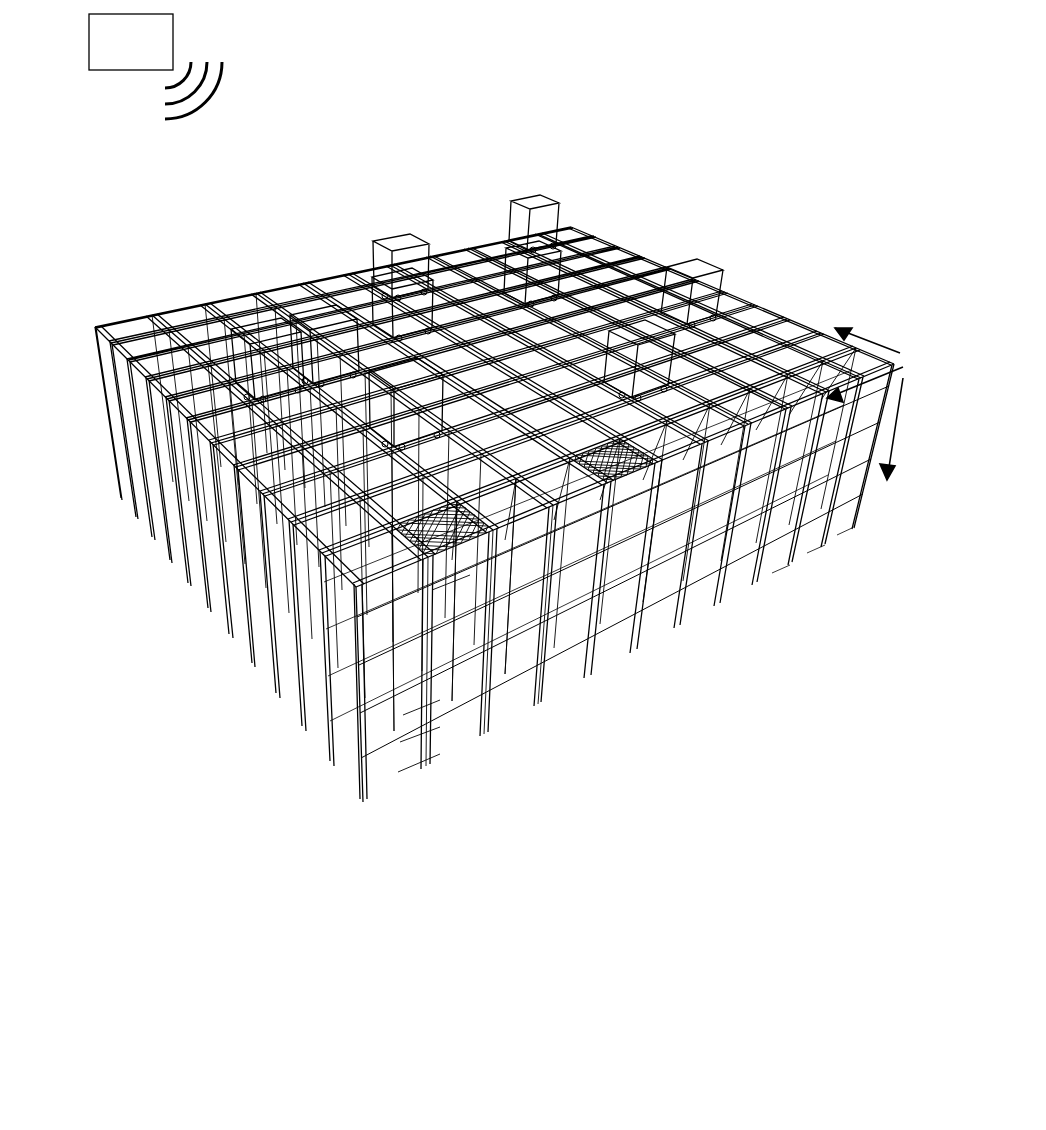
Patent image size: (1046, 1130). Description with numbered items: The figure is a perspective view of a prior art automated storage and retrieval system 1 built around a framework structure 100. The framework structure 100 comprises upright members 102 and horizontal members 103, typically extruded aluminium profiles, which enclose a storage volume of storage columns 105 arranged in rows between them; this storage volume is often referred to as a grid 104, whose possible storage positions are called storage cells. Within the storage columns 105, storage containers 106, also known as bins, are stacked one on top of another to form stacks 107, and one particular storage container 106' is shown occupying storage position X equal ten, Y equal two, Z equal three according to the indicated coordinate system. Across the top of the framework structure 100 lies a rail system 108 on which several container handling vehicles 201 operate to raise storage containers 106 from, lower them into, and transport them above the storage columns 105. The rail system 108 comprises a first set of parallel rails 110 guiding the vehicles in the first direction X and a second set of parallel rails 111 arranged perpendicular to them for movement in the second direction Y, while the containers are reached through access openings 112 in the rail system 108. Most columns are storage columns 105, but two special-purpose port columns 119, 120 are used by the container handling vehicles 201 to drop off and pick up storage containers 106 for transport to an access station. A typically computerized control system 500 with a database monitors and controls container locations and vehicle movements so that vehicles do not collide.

The automated storage and retrieval system 1 is at (441, 142).
The framework structure 100 is at (108, 488).
The upright members 102 is at (352, 685).
The horizontal members 103 is at (693, 540).
The grid 104 is at (97, 360).
The storage columns 105 is at (268, 590).
The storage containers 106 is at (507, 796).
The storage container 106' is at (512, 691).
The stacks 107 is at (772, 573).
The rail system 108 is at (820, 328).
The first set of parallel rails 110 is at (770, 353).
The second set of parallel rails 111 is at (347, 282).
The access openings 112 is at (727, 333).
The port column 119 is at (428, 537).
The port column 120 is at (600, 458).
The container handling vehicle 201 is at (555, 222).
The control system 500 is at (154, 57).